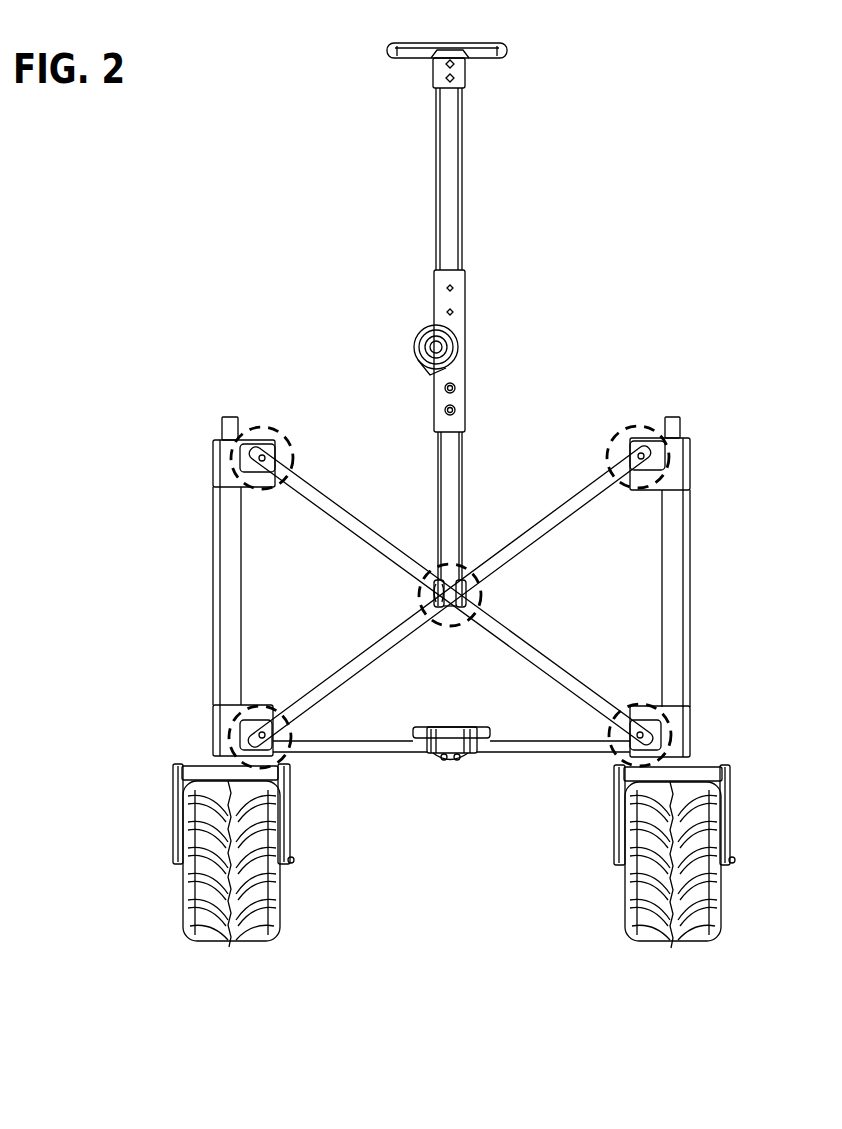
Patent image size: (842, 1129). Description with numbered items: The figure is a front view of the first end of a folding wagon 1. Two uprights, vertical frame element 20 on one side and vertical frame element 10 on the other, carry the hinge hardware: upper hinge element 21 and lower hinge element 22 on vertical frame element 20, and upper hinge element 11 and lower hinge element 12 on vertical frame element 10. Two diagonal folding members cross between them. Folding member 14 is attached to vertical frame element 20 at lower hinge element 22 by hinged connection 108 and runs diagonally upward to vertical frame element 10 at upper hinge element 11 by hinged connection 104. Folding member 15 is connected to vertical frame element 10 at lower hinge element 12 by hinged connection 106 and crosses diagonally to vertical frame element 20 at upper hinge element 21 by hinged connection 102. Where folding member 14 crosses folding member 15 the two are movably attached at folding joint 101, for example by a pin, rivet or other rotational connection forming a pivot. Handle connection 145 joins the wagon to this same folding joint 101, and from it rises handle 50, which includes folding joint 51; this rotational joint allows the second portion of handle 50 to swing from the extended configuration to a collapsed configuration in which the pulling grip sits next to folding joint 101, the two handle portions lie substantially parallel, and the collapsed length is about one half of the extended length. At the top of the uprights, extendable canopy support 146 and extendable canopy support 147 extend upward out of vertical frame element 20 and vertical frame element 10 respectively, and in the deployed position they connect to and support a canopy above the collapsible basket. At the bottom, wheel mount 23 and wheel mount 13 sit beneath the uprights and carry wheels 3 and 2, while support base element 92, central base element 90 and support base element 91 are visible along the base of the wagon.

The folding wagon 1 is at (668, 172).
The wheel 2 is at (698, 856).
The wheel 3 is at (203, 873).
The vertical frame element 10 is at (678, 605).
The upper hinge element 11 is at (682, 452).
The lower hinge element 12 is at (678, 737).
The wheel mount 13 is at (707, 768).
The folding member 14 is at (566, 520).
The folding member 15 is at (330, 515).
The vertical frame element 20 is at (223, 610).
The upper hinge element 21 is at (222, 472).
The lower hinge element 22 is at (225, 738).
The wheel mount 23 is at (193, 772).
The handle 50 is at (448, 200).
The folding joint 51 is at (430, 333).
The central base element 90 is at (442, 745).
The support base element 91 is at (537, 745).
The support base element 92 is at (355, 745).
The folding joint 101 is at (495, 593).
The hinged connection 102 is at (275, 428).
The hinged connection 104 is at (628, 478).
The hinged connection 106 is at (640, 706).
The hinged connection 108 is at (287, 748).
The handle connection 145 is at (417, 592).
The extendable canopy support 146 is at (233, 430).
The extendable canopy support 147 is at (665, 420).